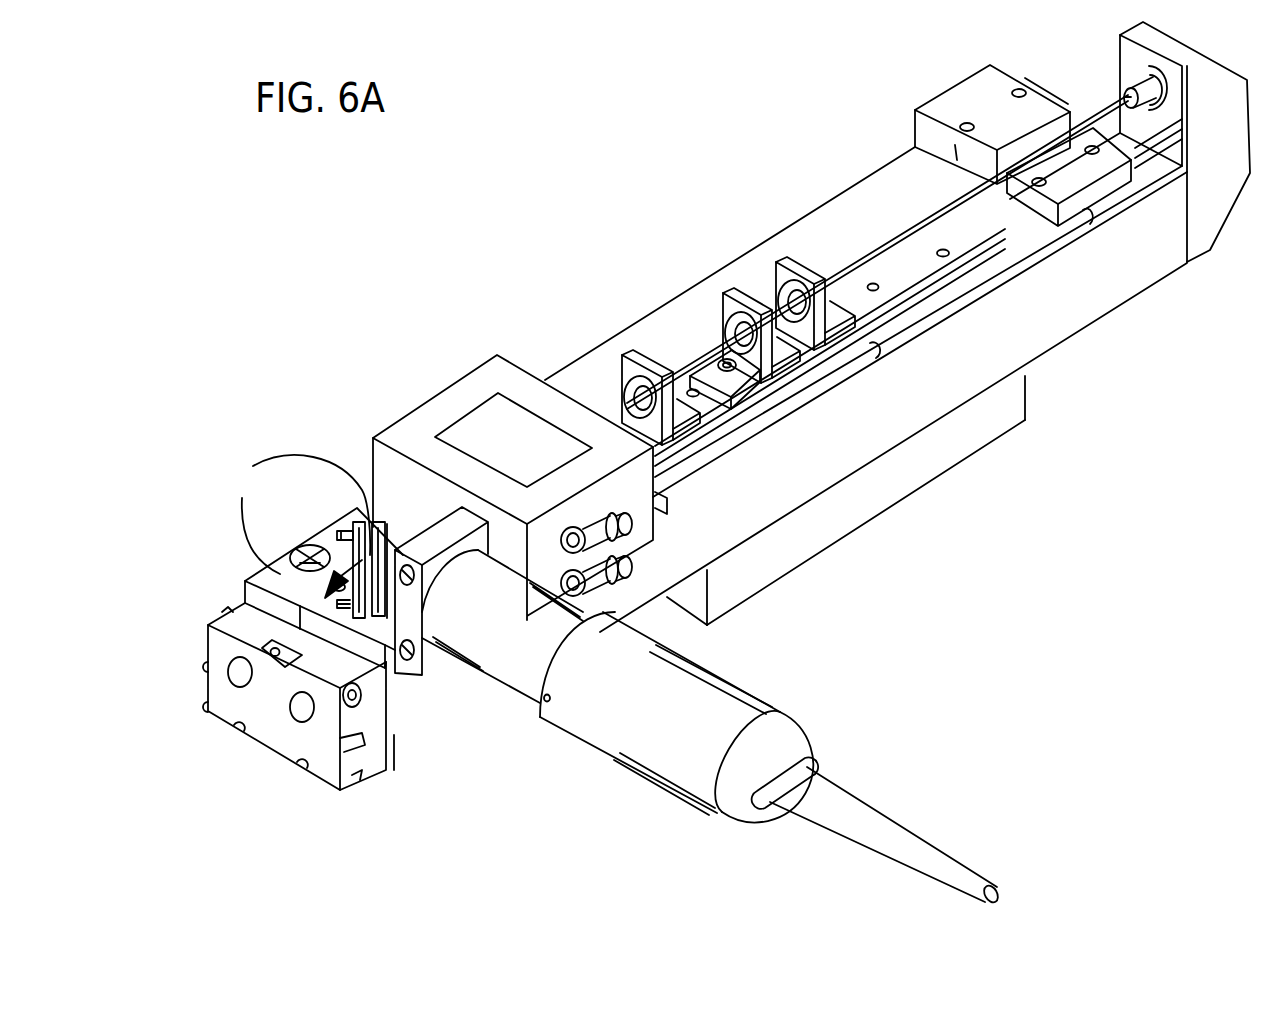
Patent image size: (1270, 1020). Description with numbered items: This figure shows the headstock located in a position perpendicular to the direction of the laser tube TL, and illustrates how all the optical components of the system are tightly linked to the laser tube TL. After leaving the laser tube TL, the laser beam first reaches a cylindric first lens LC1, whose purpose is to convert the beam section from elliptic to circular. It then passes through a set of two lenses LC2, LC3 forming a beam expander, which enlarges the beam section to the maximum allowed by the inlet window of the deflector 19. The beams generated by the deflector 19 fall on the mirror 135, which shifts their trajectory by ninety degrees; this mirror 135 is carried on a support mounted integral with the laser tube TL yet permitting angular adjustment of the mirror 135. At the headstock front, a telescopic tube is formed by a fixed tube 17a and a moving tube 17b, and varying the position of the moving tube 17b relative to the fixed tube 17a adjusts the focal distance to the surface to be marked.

The laser tube TL is at (1018, 312).
The first lens LC1 is at (782, 262).
The beam expander lens LC2 is at (728, 292).
The beam expander lens LC3 is at (620, 345).
The deflector 19 is at (488, 393).
The mirror 135 is at (358, 493).
The fixed tube 17a is at (494, 640).
The moving tube 17b is at (595, 705).